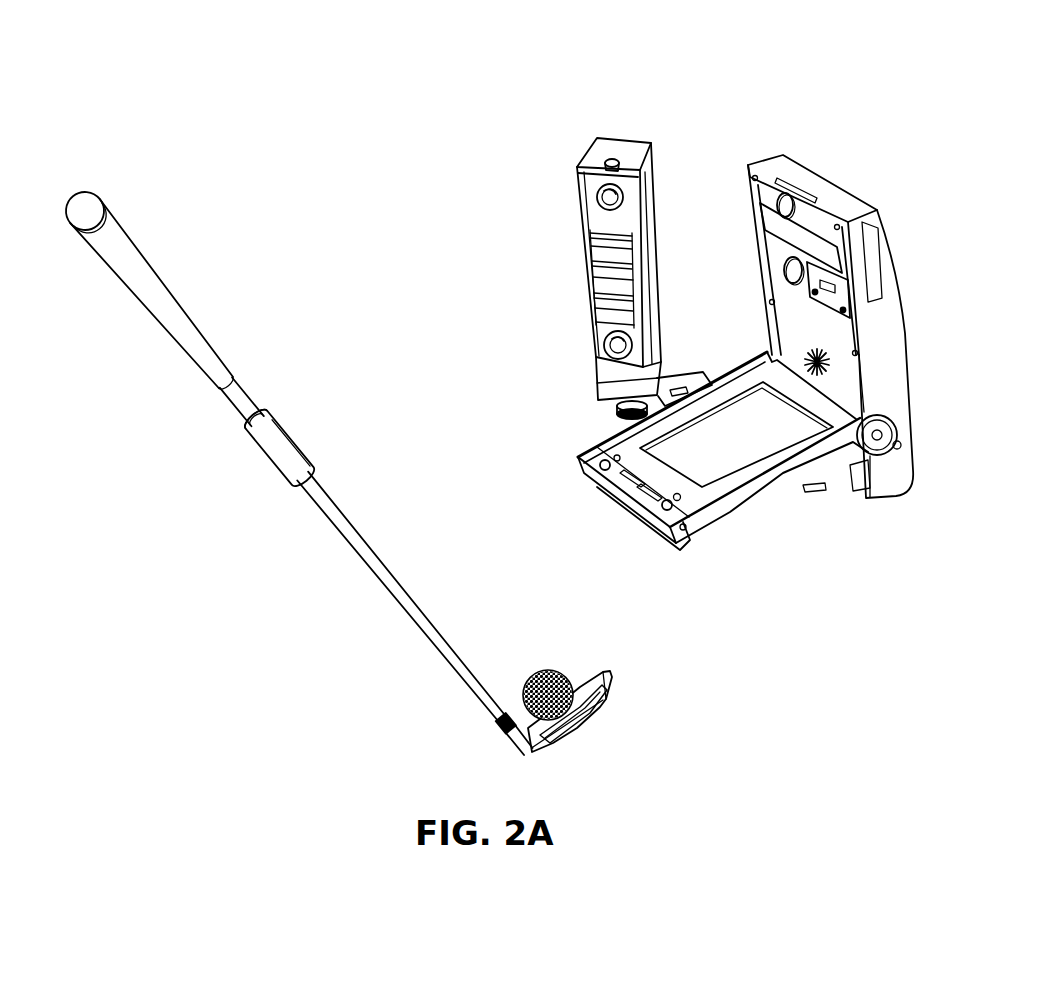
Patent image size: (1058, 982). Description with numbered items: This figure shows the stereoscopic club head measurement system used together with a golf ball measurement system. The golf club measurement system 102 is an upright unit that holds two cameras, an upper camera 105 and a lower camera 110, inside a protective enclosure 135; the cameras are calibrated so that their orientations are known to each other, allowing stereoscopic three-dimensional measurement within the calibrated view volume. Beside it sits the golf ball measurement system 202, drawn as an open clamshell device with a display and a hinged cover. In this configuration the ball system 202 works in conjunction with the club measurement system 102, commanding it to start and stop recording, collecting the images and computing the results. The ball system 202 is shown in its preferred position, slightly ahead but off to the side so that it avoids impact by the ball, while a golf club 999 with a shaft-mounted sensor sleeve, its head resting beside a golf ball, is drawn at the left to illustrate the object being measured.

The golf club measurement system 102 is at (570, 230).
The camera 105 is at (598, 197).
The camera 110 is at (601, 346).
The protective enclosure 135 is at (590, 253).
The golf ball measurement system 202 is at (798, 177).
The golf club with attached sensor 999 is at (283, 448).